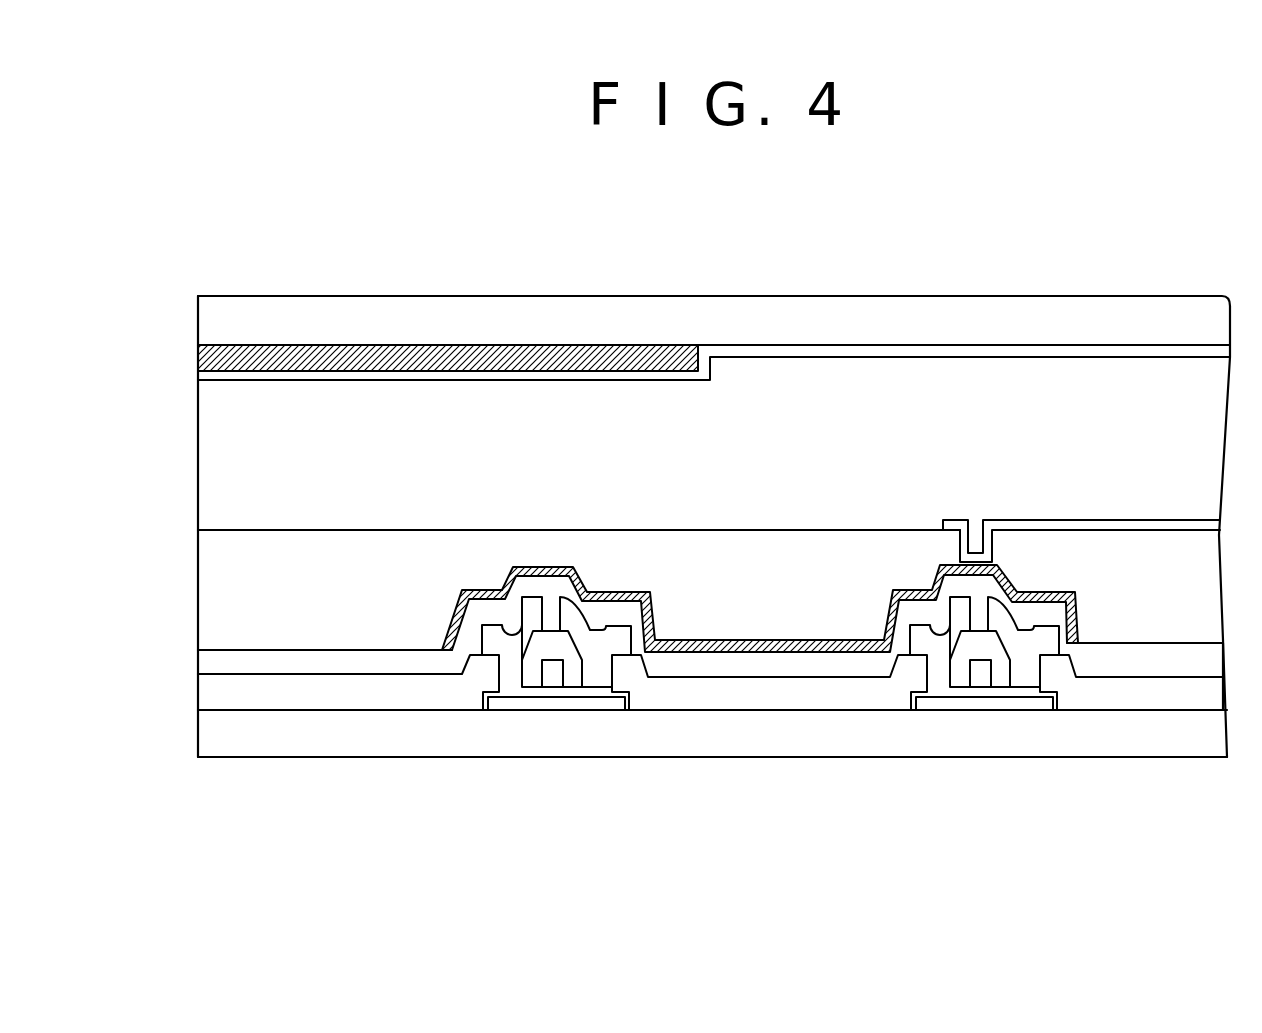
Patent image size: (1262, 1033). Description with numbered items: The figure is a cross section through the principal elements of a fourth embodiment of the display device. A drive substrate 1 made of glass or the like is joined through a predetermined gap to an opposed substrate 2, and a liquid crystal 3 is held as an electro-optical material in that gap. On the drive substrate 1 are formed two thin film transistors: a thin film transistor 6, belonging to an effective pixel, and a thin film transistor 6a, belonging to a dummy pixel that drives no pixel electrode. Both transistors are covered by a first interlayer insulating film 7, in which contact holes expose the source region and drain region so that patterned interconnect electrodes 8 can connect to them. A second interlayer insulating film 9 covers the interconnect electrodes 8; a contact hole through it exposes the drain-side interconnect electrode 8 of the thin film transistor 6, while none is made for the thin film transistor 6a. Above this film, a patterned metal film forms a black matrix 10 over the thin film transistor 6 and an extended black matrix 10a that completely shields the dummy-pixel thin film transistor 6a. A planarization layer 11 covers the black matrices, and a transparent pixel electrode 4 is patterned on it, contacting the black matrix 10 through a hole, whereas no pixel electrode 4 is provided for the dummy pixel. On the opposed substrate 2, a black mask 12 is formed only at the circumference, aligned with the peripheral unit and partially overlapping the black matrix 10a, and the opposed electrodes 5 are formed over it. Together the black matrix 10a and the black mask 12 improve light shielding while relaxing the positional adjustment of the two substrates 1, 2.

The drive substrate 1 is at (775, 758).
The opposed substrate 2 is at (200, 322).
The liquid crystal 3 is at (200, 470).
The pixel electrode 4 is at (1065, 523).
The opposed electrode 5 is at (200, 376).
The thin film transistor 6 is at (987, 712).
The thin film transistor 6a is at (553, 712).
The first interlayer insulating film 7 is at (200, 693).
The interconnect electrode 8 is at (500, 668).
The second interlayer insulating film 9 is at (200, 662).
The black matrix 10 is at (940, 563).
The black matrix 10a is at (528, 565).
The planarization layer 11 is at (200, 586).
The black mask 12 is at (462, 343).